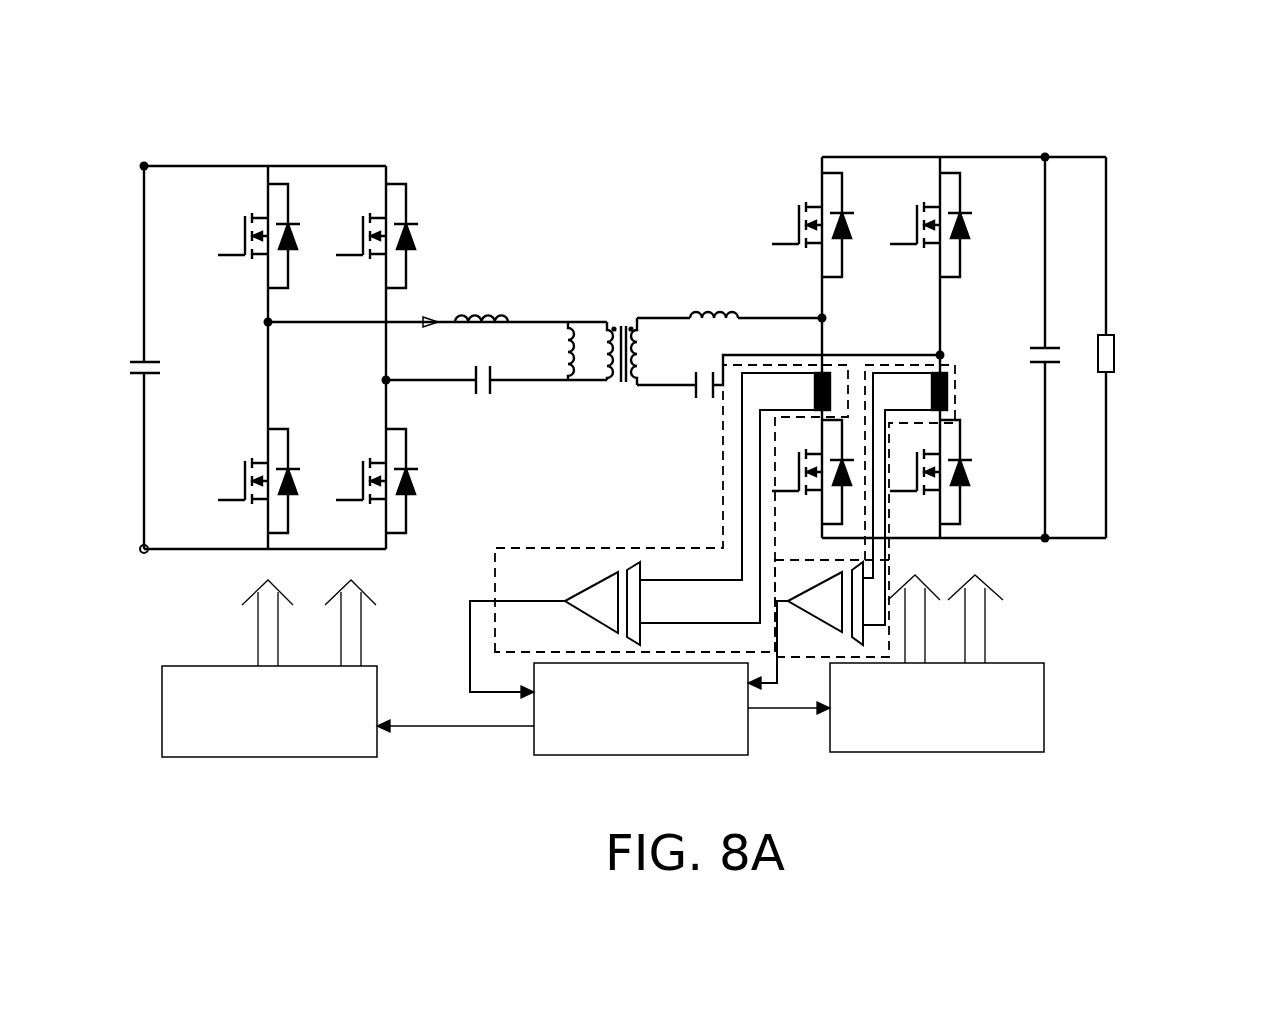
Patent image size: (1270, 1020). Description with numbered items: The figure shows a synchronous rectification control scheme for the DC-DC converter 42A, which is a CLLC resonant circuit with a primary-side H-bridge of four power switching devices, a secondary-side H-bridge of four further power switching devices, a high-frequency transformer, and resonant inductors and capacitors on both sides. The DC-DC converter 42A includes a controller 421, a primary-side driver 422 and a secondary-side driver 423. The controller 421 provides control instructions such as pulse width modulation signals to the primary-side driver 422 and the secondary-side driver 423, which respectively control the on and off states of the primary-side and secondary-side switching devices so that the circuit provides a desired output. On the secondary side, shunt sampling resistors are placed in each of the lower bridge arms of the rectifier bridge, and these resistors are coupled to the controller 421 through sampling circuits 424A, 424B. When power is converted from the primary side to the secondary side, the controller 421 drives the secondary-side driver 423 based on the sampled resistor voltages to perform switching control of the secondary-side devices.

The DC-DC converter 42A is at (335, 73).
The controller 421 is at (621, 739).
The primary-side driver 422 is at (248, 740).
The secondary-side driver 423 is at (917, 739).
The sampling circuit 424A is at (568, 548).
The sampling circuit 424B is at (889, 576).